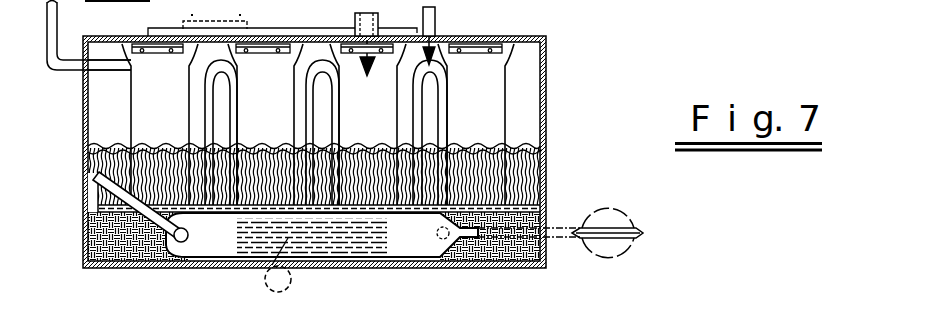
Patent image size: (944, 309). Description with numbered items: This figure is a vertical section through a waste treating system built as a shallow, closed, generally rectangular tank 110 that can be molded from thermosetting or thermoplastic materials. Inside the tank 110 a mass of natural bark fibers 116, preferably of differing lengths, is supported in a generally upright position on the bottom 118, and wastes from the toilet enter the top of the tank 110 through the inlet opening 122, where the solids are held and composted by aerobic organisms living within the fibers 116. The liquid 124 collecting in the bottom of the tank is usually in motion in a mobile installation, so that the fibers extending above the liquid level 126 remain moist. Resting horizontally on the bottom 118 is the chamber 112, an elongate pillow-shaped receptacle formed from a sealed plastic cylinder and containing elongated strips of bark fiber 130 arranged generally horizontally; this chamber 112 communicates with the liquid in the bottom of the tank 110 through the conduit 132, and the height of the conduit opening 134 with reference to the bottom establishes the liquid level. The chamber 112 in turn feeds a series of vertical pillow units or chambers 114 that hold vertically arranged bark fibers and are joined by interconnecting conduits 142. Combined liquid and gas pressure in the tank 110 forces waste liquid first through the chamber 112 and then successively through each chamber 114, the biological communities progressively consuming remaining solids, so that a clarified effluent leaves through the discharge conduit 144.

The tank 110 is at (512, 1).
The chamber 112 is at (416, 249).
The treating chambers 114 is at (168, 121).
The natural bark fibers 116 is at (88, 166).
The bottom 118 is at (326, 268).
The inlet opening 122 is at (357, 22).
The liquid 124 is at (517, 243).
The liquid level 126 is at (517, 198).
The strips of bark fiber 130 is at (262, 266).
The conduit 132 is at (98, 192).
The conduit opening 134 is at (88, 238).
The interconnecting conduits 142 is at (212, 103).
The discharge conduit 144 is at (56, 30).